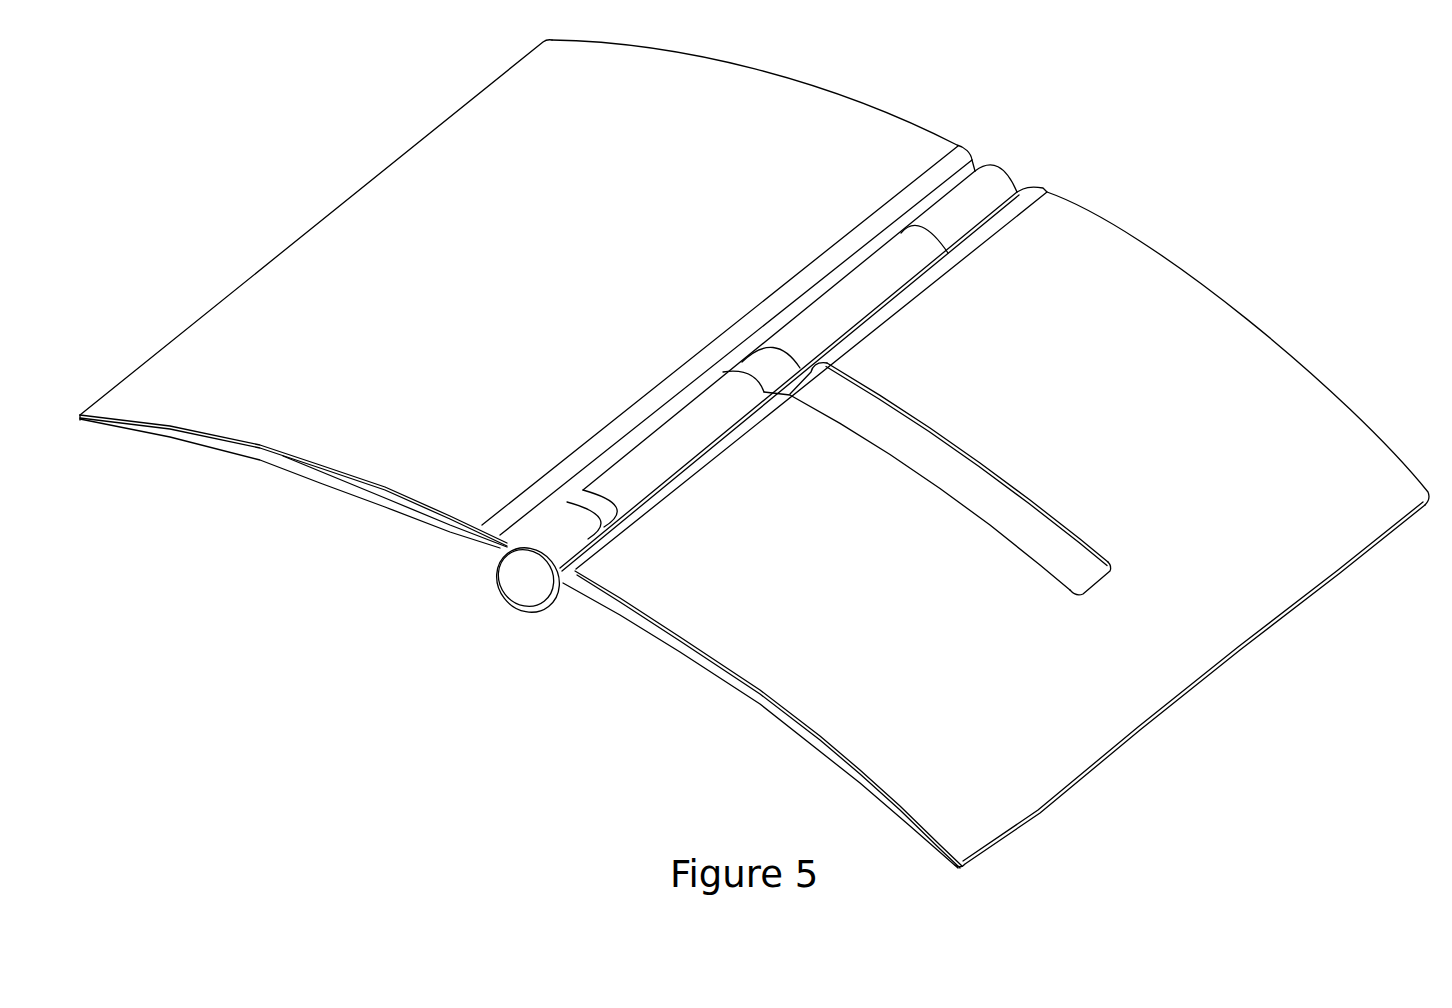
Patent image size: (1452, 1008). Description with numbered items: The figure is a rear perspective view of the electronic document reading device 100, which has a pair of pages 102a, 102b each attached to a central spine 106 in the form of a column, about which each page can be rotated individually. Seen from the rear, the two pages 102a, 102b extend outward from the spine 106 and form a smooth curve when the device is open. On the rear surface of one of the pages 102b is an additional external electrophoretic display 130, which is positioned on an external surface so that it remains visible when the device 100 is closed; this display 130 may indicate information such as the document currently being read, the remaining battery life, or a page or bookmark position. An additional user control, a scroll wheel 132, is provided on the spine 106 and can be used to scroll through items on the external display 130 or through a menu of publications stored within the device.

The electronic document reading device 100 is at (418, 783).
The page 102a is at (565, 277).
The page 102b is at (1002, 678).
The central spine 106 is at (520, 583).
The external electrophoretic display 130 is at (913, 444).
The scroll wheel 132 is at (763, 363).